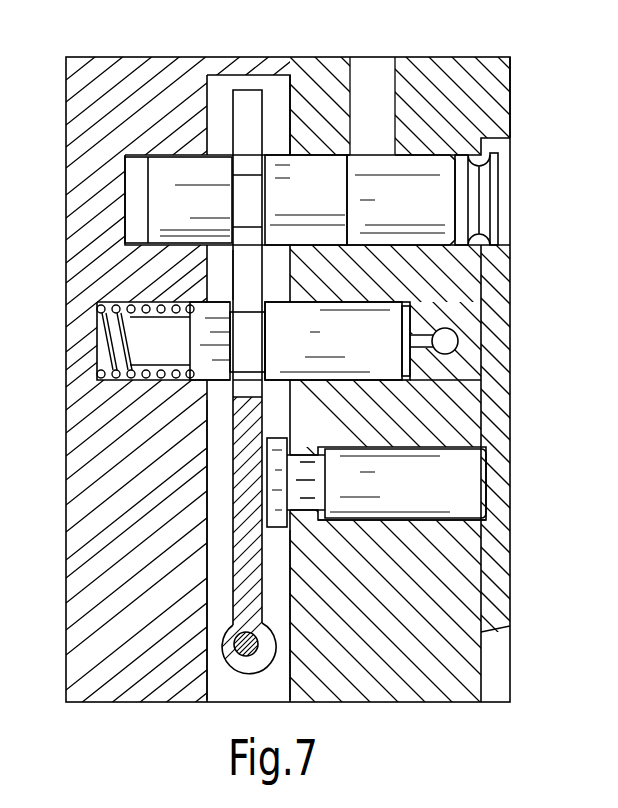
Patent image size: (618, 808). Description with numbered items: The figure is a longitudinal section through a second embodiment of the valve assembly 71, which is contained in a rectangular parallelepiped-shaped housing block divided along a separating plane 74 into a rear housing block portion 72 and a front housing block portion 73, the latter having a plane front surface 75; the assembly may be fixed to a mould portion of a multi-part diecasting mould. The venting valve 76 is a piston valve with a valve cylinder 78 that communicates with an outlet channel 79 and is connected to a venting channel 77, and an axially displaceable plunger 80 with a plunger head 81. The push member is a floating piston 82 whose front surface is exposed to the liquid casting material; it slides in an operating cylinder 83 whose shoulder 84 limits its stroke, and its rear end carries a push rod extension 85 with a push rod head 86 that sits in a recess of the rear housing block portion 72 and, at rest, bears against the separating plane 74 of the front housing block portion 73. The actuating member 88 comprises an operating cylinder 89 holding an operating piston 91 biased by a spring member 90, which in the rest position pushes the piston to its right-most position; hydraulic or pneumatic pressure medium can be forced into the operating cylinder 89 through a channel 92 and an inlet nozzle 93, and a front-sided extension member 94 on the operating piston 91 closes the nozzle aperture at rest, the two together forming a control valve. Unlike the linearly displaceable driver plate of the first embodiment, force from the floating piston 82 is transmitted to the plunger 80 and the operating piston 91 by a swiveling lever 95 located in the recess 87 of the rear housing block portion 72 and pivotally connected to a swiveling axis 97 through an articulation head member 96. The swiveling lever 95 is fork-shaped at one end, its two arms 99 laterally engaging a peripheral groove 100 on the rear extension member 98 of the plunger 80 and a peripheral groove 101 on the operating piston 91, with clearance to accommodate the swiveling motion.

The valve assembly 71 is at (313, 351).
The rear housing block portion 72 is at (104, 92).
The front housing block portion 73 is at (445, 78).
The separating plane 74 is at (292, 108).
The plane front surface 75 is at (512, 75).
The venting valve 76 is at (522, 209).
The venting channel 77 is at (505, 672).
The valve cylinder 78 is at (412, 150).
The outlet channel 79 is at (372, 97).
The plunger 80 is at (462, 160).
The plunger head 81 is at (490, 167).
The floating piston 82 is at (455, 480).
The operating cylinder 83 is at (425, 518).
The shoulder 84 is at (303, 445).
The push rod extension 85 is at (306, 495).
The push rod head 86 is at (273, 497).
The recess 87 is at (213, 438).
The actuating member 88 is at (56, 330).
The operating cylinder 89 is at (420, 395).
The spring member 90 is at (97, 367).
The operating piston 91 is at (357, 320).
The channel 92 is at (448, 340).
The inlet nozzle 93 is at (422, 338).
The front-sided extension member 94 is at (410, 373).
The swiveling lever 95 is at (233, 563).
The articulation head member 96 is at (221, 648).
The swiveling axis 97 is at (251, 657).
The rear extension member 98 is at (182, 180).
The arms 99 is at (243, 253).
The peripheral groove 100 is at (250, 200).
The peripheral groove 101 is at (245, 330).